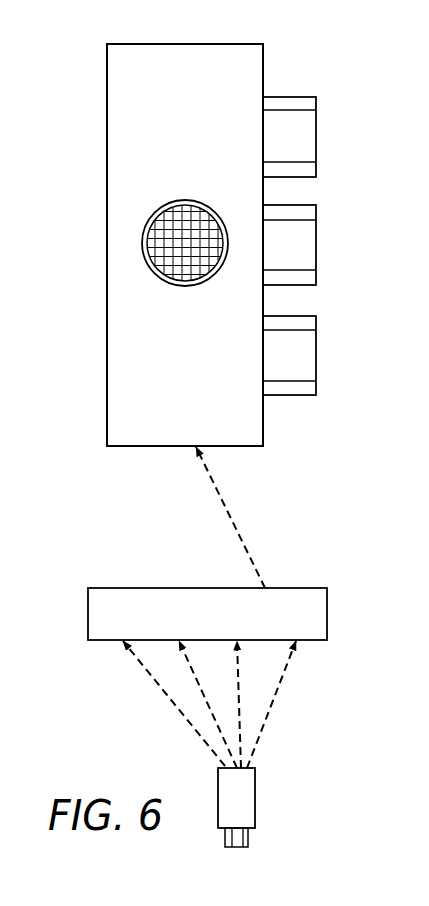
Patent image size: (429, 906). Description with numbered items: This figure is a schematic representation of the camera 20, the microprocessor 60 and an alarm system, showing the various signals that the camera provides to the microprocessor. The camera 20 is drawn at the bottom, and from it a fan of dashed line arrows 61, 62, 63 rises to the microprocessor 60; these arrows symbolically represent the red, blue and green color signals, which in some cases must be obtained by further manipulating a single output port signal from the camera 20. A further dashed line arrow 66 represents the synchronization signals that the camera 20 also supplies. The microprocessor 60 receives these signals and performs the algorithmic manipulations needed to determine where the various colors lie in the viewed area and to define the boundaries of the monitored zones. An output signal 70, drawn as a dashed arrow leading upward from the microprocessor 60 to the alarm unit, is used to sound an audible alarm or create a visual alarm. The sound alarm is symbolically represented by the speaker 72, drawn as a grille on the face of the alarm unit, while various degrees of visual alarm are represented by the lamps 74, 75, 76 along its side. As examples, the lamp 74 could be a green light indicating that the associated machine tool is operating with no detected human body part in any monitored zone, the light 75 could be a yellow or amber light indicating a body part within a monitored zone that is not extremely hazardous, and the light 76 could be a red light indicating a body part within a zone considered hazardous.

The camera 20 is at (245, 798).
The microprocessor 60 is at (327, 616).
The dashed line arrow (red color signal) 61 is at (209, 703).
The dashed line arrow (blue color signal) 62 is at (240, 703).
The dashed line arrow (green color signal) 63 is at (262, 733).
The dashed line arrow (synchronization signals) 66 is at (163, 693).
The output signal 70 is at (233, 522).
The speaker 72 is at (163, 283).
The lamp 74 is at (307, 140).
The light 75 is at (307, 245).
The light 76 is at (307, 360).